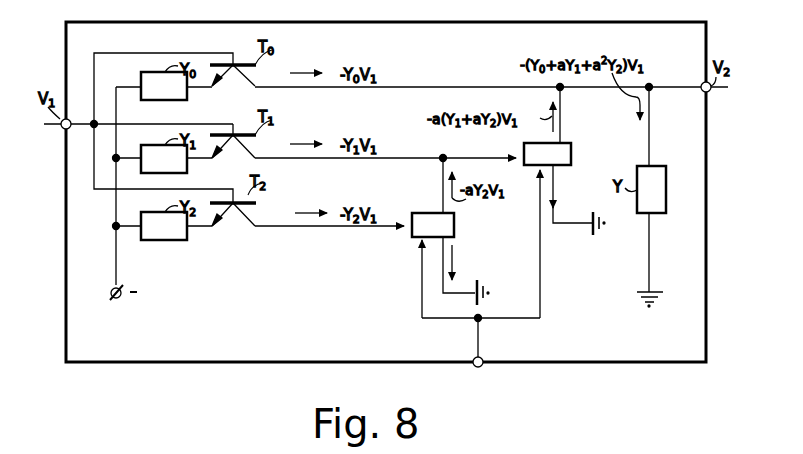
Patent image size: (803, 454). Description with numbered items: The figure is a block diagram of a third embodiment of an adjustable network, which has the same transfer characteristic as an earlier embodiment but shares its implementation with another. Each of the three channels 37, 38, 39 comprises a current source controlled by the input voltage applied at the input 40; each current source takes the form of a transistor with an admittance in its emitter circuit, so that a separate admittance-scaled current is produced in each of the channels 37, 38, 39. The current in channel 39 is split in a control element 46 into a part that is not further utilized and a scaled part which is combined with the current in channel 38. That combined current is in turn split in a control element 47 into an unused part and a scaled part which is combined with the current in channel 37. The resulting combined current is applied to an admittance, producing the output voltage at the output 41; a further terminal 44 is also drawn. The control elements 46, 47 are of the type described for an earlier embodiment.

The channel 37 is at (401, 50).
The channel 38 is at (401, 118).
The channel 39 is at (401, 188).
The input 40 is at (62, 129).
The output 41 is at (710, 92).
The common terminal 44 is at (481, 367).
The control element 46 is at (454, 230).
The control element 47 is at (571, 148).